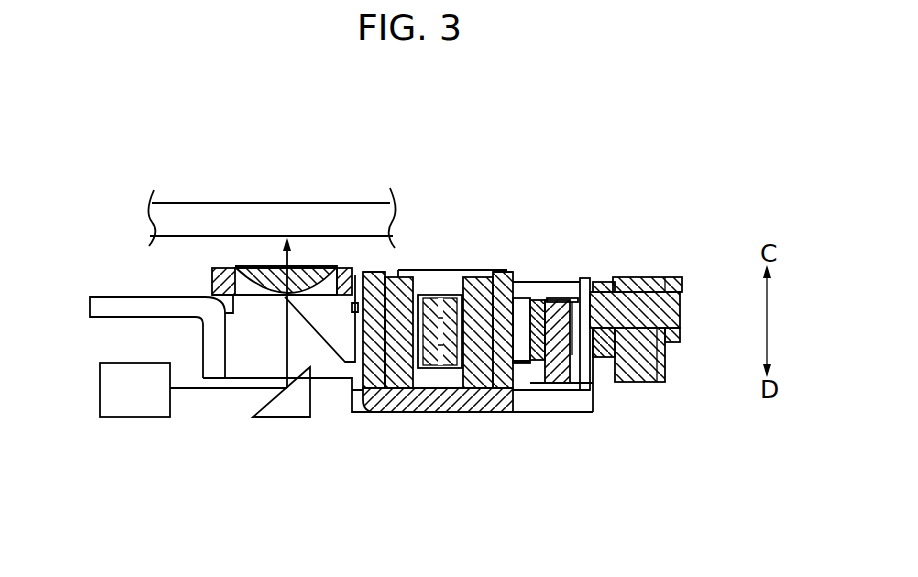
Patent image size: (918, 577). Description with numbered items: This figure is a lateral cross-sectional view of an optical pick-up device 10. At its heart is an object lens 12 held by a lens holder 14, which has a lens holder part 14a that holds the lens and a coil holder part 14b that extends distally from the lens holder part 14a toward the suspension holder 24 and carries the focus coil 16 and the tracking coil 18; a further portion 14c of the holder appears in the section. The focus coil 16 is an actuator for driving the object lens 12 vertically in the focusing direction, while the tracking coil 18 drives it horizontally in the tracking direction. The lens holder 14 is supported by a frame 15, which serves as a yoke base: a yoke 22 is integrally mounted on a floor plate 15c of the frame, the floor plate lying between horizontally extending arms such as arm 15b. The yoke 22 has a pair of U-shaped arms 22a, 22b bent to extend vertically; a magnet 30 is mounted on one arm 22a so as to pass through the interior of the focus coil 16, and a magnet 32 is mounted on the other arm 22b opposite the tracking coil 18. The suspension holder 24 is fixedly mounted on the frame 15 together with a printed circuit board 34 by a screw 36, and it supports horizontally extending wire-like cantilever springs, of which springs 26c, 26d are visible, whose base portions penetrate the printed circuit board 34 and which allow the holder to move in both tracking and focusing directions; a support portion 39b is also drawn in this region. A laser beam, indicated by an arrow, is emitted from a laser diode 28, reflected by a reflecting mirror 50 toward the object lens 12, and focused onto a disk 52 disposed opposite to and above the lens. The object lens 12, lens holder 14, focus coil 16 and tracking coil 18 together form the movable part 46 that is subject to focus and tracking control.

The optical pick-up device 10 is at (577, 149).
The object lens 12 is at (318, 267).
The lens holder 14 is at (333, 337).
The lens holder part 14a is at (349, 275).
The coil holder part 14b is at (527, 292).
The lens holder portion 14c is at (228, 266).
The frame 15 is at (120, 302).
The arm 15b is at (260, 365).
The floor plate 15c is at (520, 412).
The focus coil 16 is at (545, 297).
The tracking coil 18 is at (430, 293).
The yoke 22 is at (400, 410).
The arm of yoke 22a is at (503, 274).
The arm of yoke 22b is at (366, 274).
The suspension holder 24 is at (645, 279).
The cantilever spring 26c is at (560, 296).
The cantilever spring 26d is at (574, 357).
The laser diode 28 is at (137, 408).
The magnet 30 is at (470, 410).
The magnet 32 is at (375, 412).
The printed circuit board 34 is at (666, 366).
The screw 36 is at (678, 300).
The support portion 39b is at (583, 292).
The movable part 46 is at (482, 262).
The reflecting mirror 50 is at (271, 417).
The optical disc 52 is at (268, 213).